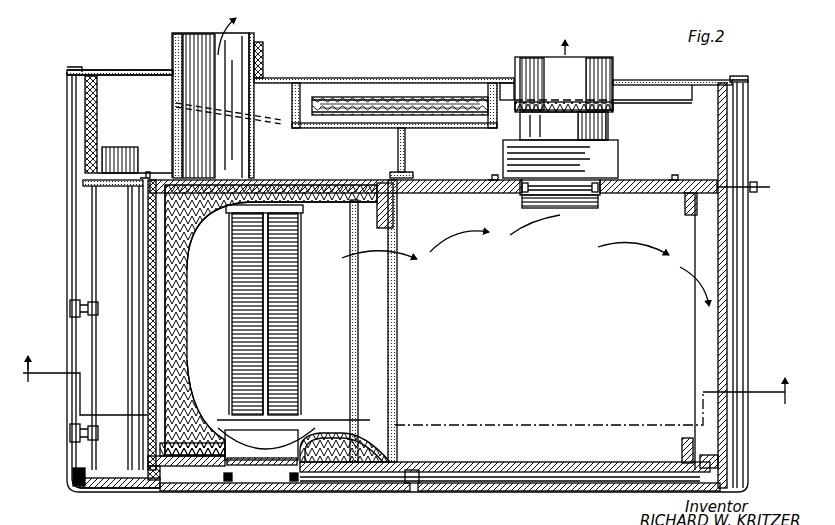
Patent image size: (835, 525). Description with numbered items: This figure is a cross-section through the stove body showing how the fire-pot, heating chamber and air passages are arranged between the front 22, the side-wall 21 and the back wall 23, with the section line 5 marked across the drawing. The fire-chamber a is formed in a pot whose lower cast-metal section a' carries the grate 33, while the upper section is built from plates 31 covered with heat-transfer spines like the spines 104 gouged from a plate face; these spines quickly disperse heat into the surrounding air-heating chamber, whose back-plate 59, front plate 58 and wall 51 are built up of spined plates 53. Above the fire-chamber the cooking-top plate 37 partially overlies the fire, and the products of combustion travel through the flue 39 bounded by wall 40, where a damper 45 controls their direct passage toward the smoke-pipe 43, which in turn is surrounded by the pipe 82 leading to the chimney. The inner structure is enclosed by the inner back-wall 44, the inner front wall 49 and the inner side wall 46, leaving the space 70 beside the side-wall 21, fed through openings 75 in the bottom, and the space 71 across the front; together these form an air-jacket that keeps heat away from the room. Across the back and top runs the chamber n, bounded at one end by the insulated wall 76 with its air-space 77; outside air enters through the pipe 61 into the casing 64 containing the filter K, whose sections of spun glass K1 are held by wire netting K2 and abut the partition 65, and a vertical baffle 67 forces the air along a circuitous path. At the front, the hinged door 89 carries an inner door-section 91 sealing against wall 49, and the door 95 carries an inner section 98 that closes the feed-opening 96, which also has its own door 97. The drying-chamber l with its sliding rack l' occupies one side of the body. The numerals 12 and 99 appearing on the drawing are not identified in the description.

The side-wall 21 is at (745, 266).
The air-space 77 is at (73, 106).
The insulated wall 76 is at (87, 143).
The chamber n is at (134, 135).
The inner back-wall 44 is at (147, 177).
The back-plate 59 is at (343, 170).
The pipe 61 is at (262, 66).
The casing 64 is at (268, 118).
The partition 65 is at (318, 80).
The filter K is at (398, 94).
The mass of spun glass K1 is at (430, 103).
The wire netting K2 is at (490, 80).
The vertical baffle 67 is at (405, 148).
The pipe 82 is at (608, 58).
The smoke-pipe 43 is at (585, 130).
The back wall 23 is at (643, 82).
The space 70 is at (740, 106).
The openings 75 is at (735, 241).
The inner side wall 46 is at (727, 296).
The wall 40 is at (435, 195).
The damper 45 is at (565, 206).
The flue 39 is at (525, 260).
The fire-chamber a is at (321, 273).
The plate 37 is at (185, 316).
The spines 104 is at (210, 195).
The lower cast-metal section a' is at (204, 355).
The plates 31 is at (258, 200).
The grate 33 is at (280, 316).
The door 95 is at (250, 468).
The front plate 58 is at (186, 447).
The feed-opening 96 is at (325, 463).
The door 97 is at (290, 470).
The inner front wall 49 is at (160, 478).
The inner door-section 91 is at (575, 476).
The hinged door 89 is at (592, 490).
The inner section 98 is at (226, 478).
The space 71 is at (405, 482).
The front 22 is at (78, 488).
The bottom plate 12 is at (115, 485).
The side compartment 99 is at (80, 254).
The drying-chamber l is at (89, 303).
The rack l' is at (75, 338).
The plates 53 is at (148, 367).
The wall 51 is at (147, 386).
The section line 5 is at (403, 385).